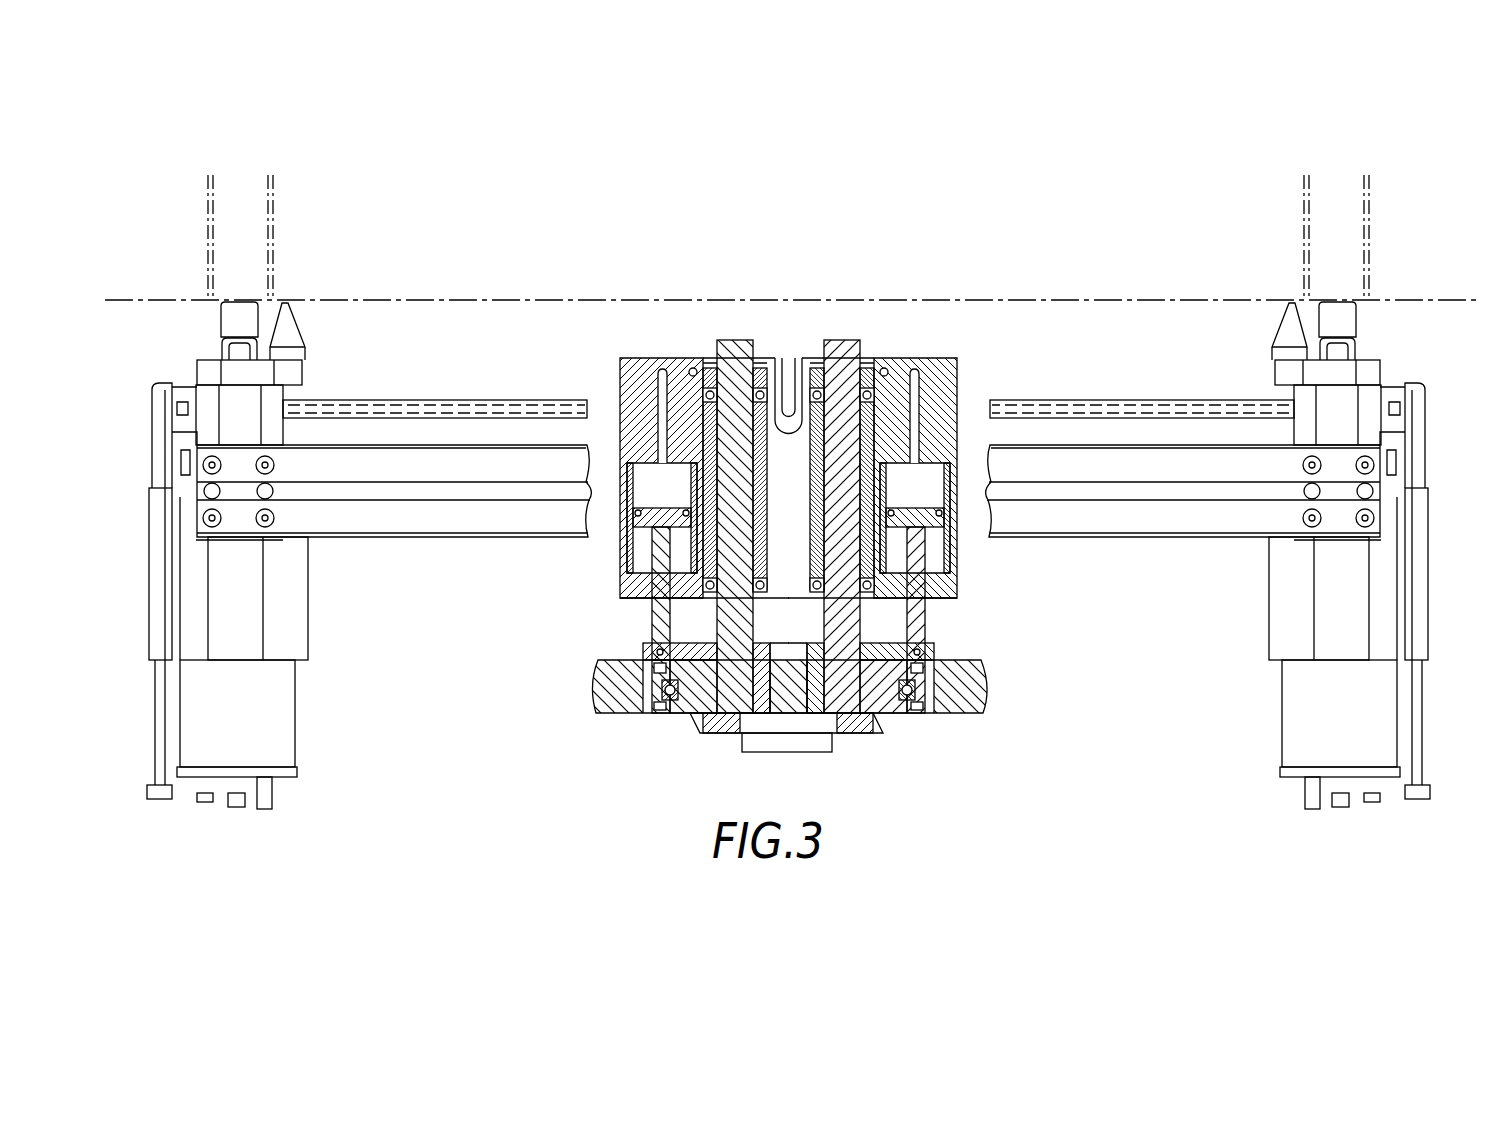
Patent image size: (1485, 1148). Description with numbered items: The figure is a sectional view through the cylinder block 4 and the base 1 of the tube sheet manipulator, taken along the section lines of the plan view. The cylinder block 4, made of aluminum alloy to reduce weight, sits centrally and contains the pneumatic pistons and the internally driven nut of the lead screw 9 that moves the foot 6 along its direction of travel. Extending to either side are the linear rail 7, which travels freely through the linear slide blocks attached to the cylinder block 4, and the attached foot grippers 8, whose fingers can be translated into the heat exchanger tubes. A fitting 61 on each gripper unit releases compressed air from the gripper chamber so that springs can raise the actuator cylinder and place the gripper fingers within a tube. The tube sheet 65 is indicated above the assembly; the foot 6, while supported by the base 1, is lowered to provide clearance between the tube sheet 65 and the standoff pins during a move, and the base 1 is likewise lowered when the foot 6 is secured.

The base 1 is at (955, 715).
The cylinder block 4 is at (958, 372).
The foot 6 is at (1090, 391).
The linear rail 7 is at (1142, 538).
The foot grippers 8 is at (311, 588).
The lead screw 9 is at (460, 400).
The fitting 61 is at (182, 428).
The tube sheet 65 is at (797, 300).